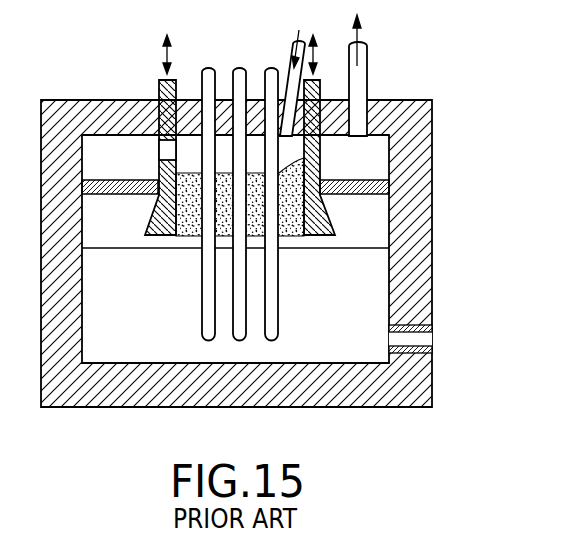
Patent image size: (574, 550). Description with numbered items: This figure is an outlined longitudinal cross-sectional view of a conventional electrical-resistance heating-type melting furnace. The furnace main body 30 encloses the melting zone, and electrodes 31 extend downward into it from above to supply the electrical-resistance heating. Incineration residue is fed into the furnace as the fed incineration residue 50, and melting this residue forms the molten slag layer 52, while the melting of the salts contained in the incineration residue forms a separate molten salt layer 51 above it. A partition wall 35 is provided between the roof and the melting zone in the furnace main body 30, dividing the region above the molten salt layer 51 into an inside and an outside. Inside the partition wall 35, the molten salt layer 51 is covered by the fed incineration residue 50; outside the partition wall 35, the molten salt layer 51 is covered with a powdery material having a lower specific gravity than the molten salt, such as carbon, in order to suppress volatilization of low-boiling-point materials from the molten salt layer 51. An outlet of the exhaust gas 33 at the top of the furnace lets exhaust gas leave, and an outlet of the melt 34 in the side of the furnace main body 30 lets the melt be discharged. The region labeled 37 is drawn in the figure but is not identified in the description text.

The furnace main body 30 is at (449, 127).
The electrodes 31 is at (212, 333).
The outlet of the exhaust gas 33 is at (356, 82).
The outlet of the melt 34 is at (420, 336).
The partition wall 35 is at (159, 173).
The upper chamber 37 is at (365, 168).
The fed incineration residue 50 is at (182, 175).
The molten salt layer 51 is at (362, 232).
The molten slag layer 52 is at (318, 325).